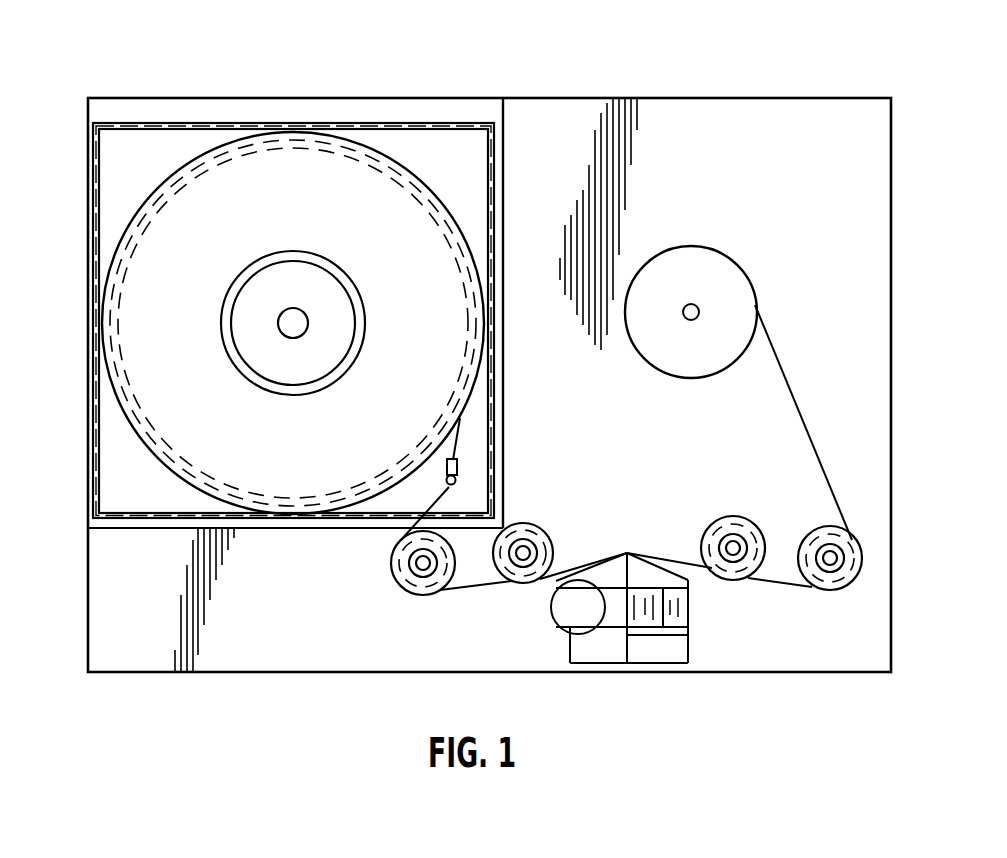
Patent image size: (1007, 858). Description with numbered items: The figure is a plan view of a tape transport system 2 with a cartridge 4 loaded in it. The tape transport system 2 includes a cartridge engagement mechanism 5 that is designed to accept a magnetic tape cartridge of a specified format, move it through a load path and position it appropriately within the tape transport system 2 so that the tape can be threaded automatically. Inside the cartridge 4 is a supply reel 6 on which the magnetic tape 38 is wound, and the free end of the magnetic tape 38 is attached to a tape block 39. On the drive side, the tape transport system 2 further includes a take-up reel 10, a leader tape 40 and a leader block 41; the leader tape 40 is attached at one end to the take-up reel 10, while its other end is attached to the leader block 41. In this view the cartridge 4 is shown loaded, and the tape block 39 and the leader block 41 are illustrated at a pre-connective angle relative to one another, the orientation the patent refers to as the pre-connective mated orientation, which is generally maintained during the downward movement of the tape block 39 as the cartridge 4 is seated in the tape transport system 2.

The tape transport system 2 is at (664, 78).
The cartridge 4 is at (93, 492).
The cartridge engagement mechanism 5 is at (504, 136).
The supply reel 6 is at (221, 328).
The take-up reel 10 is at (735, 259).
The magnetic tape 38 is at (357, 146).
The tape block 39 is at (458, 476).
The leader tape 40 is at (793, 405).
The leader block 41 is at (446, 482).